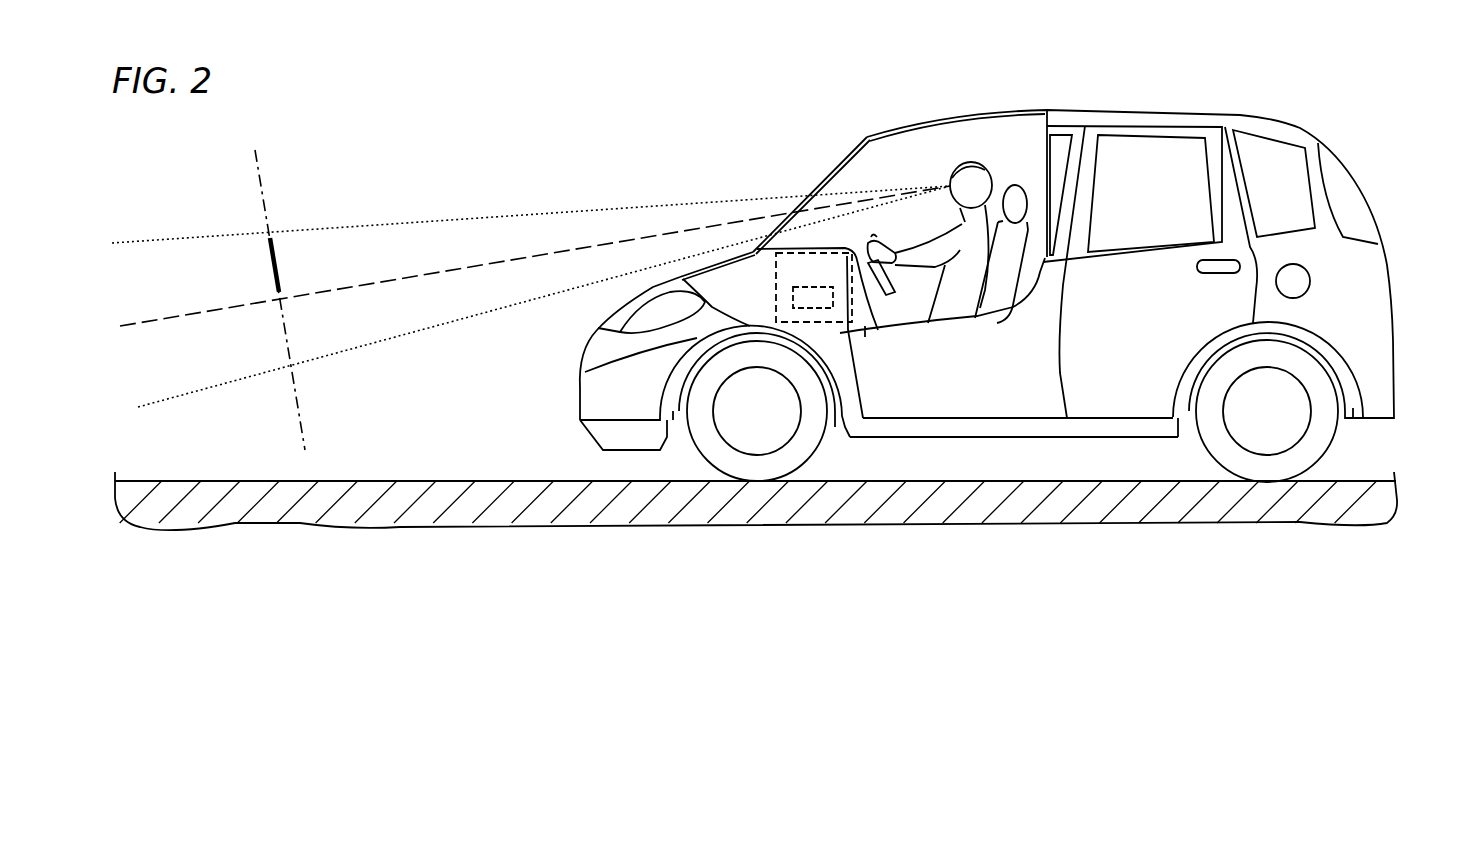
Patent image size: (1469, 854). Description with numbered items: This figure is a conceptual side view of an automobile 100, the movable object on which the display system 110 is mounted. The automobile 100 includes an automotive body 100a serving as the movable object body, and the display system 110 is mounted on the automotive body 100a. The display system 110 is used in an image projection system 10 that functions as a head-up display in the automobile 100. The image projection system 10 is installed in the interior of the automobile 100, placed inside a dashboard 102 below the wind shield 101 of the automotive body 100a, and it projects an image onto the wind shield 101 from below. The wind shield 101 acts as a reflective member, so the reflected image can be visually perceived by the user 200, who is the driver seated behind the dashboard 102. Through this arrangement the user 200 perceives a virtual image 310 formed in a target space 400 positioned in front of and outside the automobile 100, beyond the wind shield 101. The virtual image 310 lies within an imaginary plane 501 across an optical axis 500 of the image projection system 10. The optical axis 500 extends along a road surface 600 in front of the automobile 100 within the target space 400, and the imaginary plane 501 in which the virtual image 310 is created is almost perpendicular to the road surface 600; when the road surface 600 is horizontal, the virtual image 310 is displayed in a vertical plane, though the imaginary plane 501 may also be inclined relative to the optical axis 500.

The image projection system 10 is at (855, 298).
The automobile 100 is at (1020, 270).
The automotive body 100a is at (1372, 287).
The wind shield 101 is at (823, 175).
The dashboard 102 is at (857, 330).
The display system 110 is at (790, 293).
The user 200 is at (983, 175).
The virtual image 310 is at (274, 240).
The target space 400 is at (562, 207).
The optical axis 500 is at (153, 326).
The imaginary plane 501 is at (256, 157).
The road surface 600 is at (448, 480).